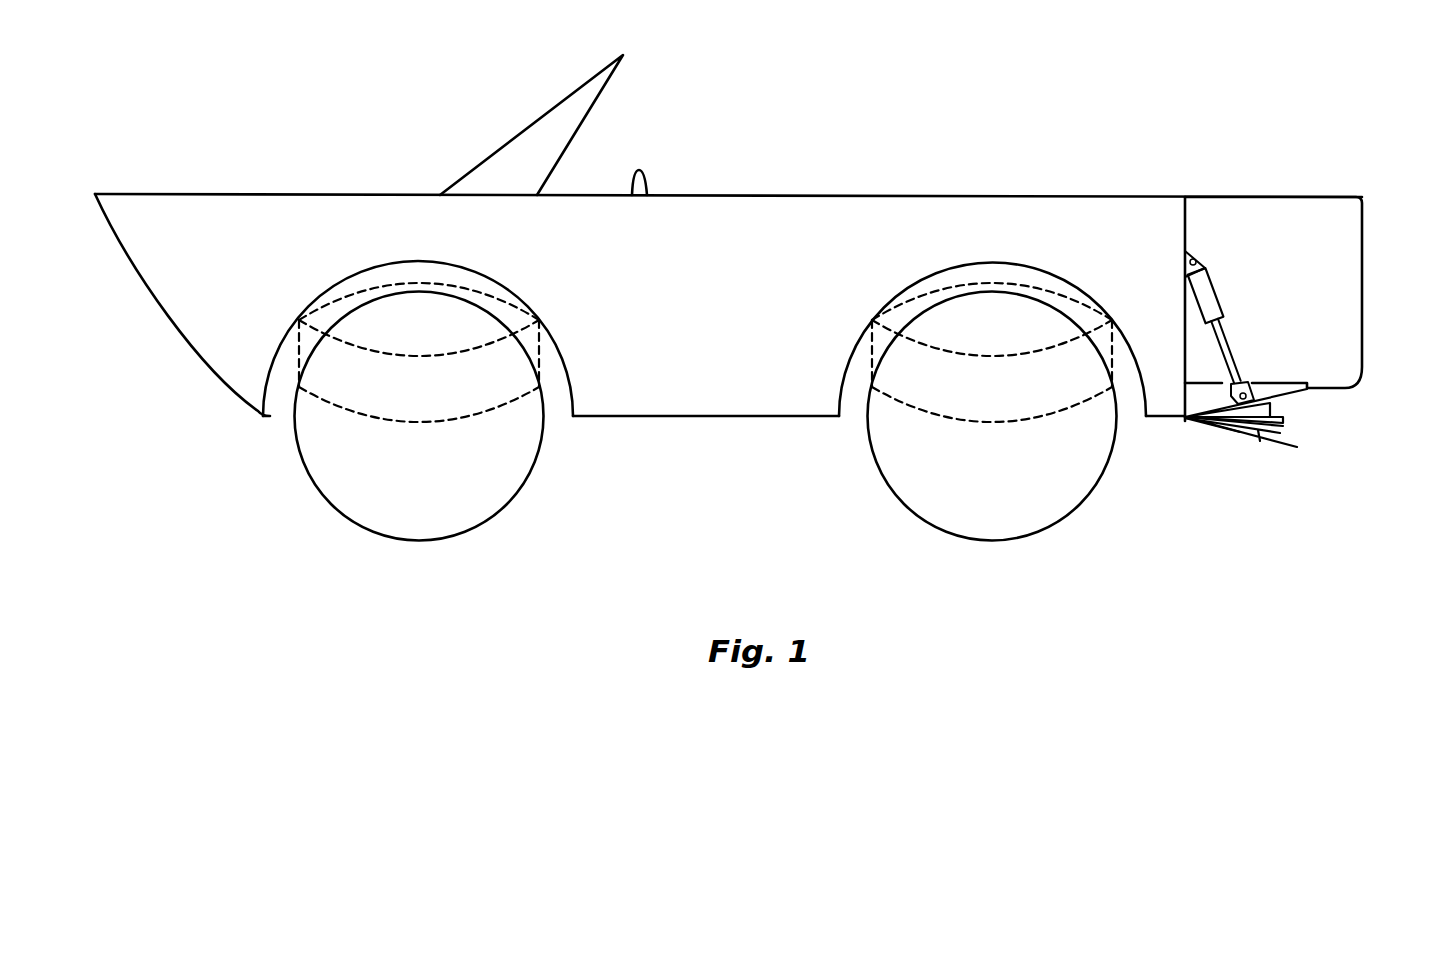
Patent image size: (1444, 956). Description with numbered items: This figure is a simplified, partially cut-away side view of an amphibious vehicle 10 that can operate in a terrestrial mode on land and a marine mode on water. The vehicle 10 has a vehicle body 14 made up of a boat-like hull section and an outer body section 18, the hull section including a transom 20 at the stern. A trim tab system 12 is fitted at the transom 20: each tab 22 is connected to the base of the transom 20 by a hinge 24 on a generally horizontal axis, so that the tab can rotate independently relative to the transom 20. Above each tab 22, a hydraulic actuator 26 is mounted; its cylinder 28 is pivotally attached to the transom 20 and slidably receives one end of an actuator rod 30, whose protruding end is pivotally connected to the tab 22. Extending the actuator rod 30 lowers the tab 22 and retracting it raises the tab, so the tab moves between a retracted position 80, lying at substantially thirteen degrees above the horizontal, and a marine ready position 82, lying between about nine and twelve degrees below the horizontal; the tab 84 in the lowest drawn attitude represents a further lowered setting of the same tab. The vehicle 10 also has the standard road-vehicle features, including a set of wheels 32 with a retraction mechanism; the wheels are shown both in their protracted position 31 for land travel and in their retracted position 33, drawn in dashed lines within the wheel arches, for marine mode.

The amphibious vehicle 10 is at (1030, 153).
The trim tab system 12 is at (1228, 465).
The vehicle body 14 is at (797, 195).
The outer body section 18 is at (1363, 268).
The transom 20 is at (1192, 218).
The tab 22 is at (1307, 392).
The hinge 24 is at (1185, 421).
The hydraulic actuator 26 is at (1235, 255).
The cylinder 28 is at (1207, 293).
The actuator rod 30 is at (1227, 348).
The protracted position 31 is at (318, 490).
The wheels 32 is at (542, 433).
The retracted position 33 is at (298, 357).
The retracted position 80 is at (1281, 418).
The marine ready position 82 is at (1284, 426).
The lower fin 84 is at (1259, 434).